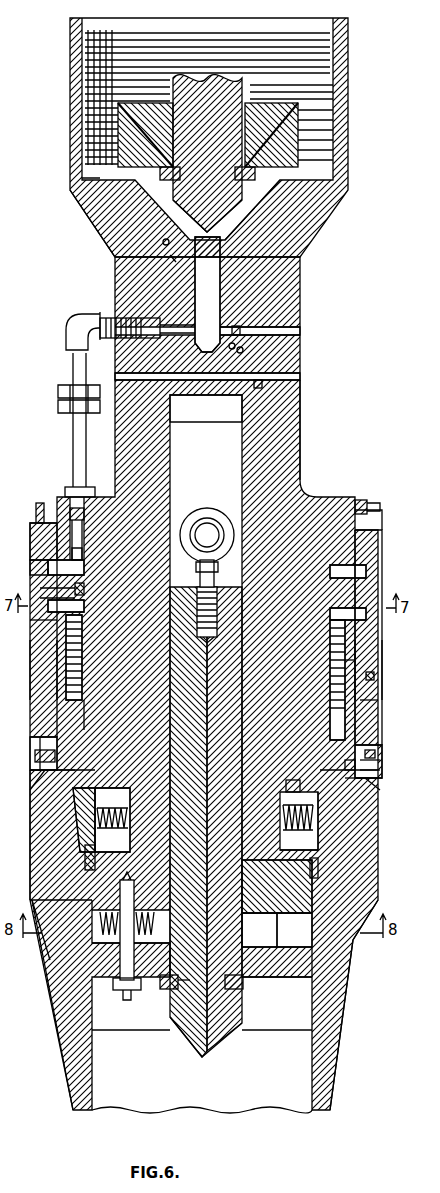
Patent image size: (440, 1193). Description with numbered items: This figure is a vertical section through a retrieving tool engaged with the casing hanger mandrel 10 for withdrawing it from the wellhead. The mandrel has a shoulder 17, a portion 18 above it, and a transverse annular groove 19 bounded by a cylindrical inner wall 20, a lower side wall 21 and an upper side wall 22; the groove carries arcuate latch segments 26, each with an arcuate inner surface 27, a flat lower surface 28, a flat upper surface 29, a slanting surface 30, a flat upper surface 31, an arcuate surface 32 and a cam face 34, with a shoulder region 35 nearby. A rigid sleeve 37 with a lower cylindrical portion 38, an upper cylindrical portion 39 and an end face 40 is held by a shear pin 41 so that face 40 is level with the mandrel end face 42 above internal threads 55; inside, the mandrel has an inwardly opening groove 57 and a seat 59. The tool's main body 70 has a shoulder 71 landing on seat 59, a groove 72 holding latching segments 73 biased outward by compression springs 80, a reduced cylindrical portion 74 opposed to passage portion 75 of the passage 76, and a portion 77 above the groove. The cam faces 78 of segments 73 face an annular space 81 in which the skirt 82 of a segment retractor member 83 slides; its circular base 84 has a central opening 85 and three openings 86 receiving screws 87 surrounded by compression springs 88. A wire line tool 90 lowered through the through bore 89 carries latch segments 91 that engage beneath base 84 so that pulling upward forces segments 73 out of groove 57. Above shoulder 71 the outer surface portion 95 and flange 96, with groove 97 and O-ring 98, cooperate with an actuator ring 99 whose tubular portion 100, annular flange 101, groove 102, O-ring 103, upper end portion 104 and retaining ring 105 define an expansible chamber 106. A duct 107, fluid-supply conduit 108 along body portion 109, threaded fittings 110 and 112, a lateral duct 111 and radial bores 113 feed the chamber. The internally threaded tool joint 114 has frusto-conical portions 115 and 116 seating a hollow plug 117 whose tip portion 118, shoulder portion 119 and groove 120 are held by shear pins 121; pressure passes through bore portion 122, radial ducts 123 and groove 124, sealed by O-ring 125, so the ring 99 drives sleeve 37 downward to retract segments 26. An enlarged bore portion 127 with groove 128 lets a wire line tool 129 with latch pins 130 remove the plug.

The casing hanger mandrel 10 is at (344, 1003).
The shoulder 17 is at (42, 928).
The portion 18 is at (32, 831).
The transverse annular groove 19 is at (69, 772).
The cylindrical inner wall 20 is at (54, 754).
The lower side wall 21 is at (47, 781).
The upper side wall 22 is at (50, 737).
The latch segments 26 is at (380, 745).
The arcuate inner surface 27 is at (342, 761).
The flat lower surface 28 is at (365, 784).
The flat upper surface 29 is at (338, 738).
The slanting surface 30 is at (381, 780).
The flat upper surface 31 is at (381, 762).
The arcuate surface 32 is at (381, 771).
The cam face 34 is at (378, 750).
The shoulder 35 is at (342, 779).
The sleeve 37 is at (384, 648).
The lower cylindrical portion 38 is at (378, 700).
The upper cylindrical portion 39 is at (380, 660).
The end face 40 is at (34, 627).
The shear pin 41 is at (378, 680).
The upper end face 42 is at (332, 618).
The internal threads 55 is at (82, 638).
The inwardly opening groove 57 is at (326, 838).
The seat 59 is at (84, 735).
The main body 70 is at (312, 497).
The shoulder 71 is at (100, 760).
The outwardly opening groove 72 is at (290, 790).
The latching segments 73 is at (283, 850).
The cylindrical portion 74 is at (290, 900).
The passage portion 75 is at (316, 976).
The passage 76 is at (276, 1092).
The body portion 77 is at (130, 783).
The cam faces 78 is at (320, 858).
The compression spring 80 is at (282, 806).
The annular space 81 is at (90, 855).
The skirt 82 is at (88, 913).
The segment retractor member 83 is at (278, 986).
The circular base 84 is at (276, 948).
The central opening 85 is at (246, 947).
The openings 86 is at (138, 936).
The screws 87 is at (128, 991).
The compression spring 88 is at (100, 930).
The through bore 89 is at (219, 487).
The wire line tool 90 is at (232, 1028).
The latch segments 91 is at (166, 990).
The outer surface portion 95 is at (332, 572).
The flange 96 is at (44, 544).
The groove 97 is at (84, 534).
The O-ring 98 is at (84, 556).
The actuator ring 99 is at (382, 578).
The tubular portion 100 is at (46, 566).
The annular flange 101 is at (57, 591).
The groove 102 is at (84, 588).
The O-ring 103 is at (84, 604).
The upper end portion 104 is at (374, 526).
The ring 105 is at (362, 512).
The expansible chamber 106 is at (84, 570).
The duct 107 is at (84, 546).
The fluid-supply conduit 108 is at (73, 450).
The body portion 109 is at (303, 478).
The threaded fitting 110 is at (90, 487).
The lateral duct 111 is at (158, 322).
The threaded fitting 112 is at (94, 320).
The radial bores 113 is at (298, 396).
The tool joint 114 is at (348, 85).
The frusto-conical portion 115 is at (80, 200).
The frusto-conical portion 116 is at (170, 260).
The hollow plug 117 is at (300, 110).
The tip portion 118 is at (216, 402).
The frusto-conical shoulder portion 119 is at (163, 243).
The transverse annular groove 120 is at (259, 389).
The shear pins 121 is at (288, 378).
The bore portion 122 is at (212, 316).
The radial ducts 123 is at (230, 349).
The transverse annular groove 124 is at (242, 334).
The O-ring 125 is at (238, 328).
The enlarged bore portion 127 is at (176, 206).
The transverse annular groove 128 is at (250, 213).
The wire line tool 129 is at (218, 82).
The latch pins 130 is at (172, 180).